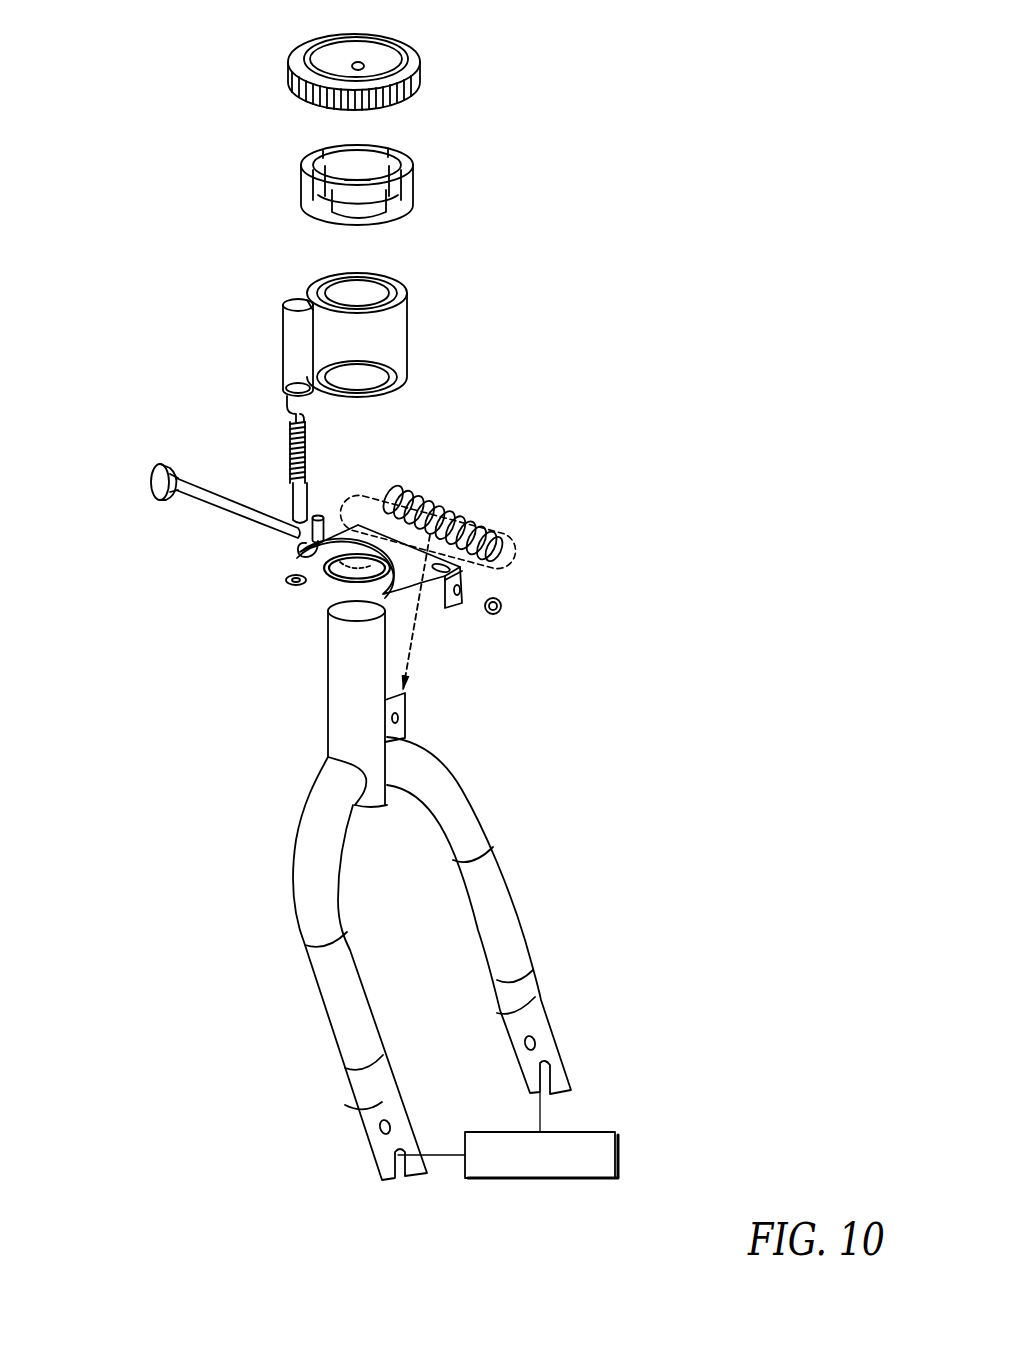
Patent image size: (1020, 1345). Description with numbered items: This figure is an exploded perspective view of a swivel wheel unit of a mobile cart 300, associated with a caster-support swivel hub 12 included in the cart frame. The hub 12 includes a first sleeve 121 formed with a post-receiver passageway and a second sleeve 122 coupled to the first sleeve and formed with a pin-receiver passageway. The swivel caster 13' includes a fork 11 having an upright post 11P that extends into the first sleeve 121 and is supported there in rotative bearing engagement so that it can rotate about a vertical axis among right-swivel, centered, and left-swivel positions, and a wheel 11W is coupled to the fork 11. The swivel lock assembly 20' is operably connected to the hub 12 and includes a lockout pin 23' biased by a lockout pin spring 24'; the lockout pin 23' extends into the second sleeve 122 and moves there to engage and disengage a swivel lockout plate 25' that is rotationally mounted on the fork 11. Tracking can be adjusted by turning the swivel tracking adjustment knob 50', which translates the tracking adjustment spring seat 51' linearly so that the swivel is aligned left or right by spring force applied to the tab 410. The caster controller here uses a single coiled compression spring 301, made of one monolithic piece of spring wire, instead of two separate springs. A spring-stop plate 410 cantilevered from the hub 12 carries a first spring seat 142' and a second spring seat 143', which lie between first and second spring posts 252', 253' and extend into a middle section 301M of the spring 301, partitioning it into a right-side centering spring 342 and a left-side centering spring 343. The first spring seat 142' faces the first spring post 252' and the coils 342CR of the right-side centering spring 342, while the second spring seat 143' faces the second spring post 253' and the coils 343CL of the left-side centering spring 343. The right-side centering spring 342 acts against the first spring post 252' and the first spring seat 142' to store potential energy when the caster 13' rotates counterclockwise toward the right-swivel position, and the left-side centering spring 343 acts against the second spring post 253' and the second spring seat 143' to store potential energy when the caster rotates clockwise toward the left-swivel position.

The mobile cart 300 is at (726, 172).
The swivel lock assembly 20' is at (286, 129).
The caster-support swivel hub 12 is at (361, 326).
The first sleeve 121 is at (407, 348).
The second sleeve 122 is at (282, 333).
The lockout pin spring 24' is at (237, 447).
The lockout pin 23' is at (253, 483).
The tracking adjustment spring seat 51' is at (334, 493).
The swivel tracking adjustment knob 50' is at (181, 511).
The swivel lockout plate 25' is at (340, 586).
The second spring post 253' is at (425, 611).
The first spring post 252' is at (533, 603).
The single coiled compression spring 301 is at (529, 515).
The left-side centering spring 343 is at (466, 480).
The coils 343CL is at (417, 488).
The right-side centering spring 342 is at (488, 522).
The coils 342CR is at (497, 533).
The middle section 301M is at (452, 506).
The fork 11 is at (422, 890).
The upright post 11P is at (331, 666).
The second spring seat 143' is at (316, 685).
The first spring seat 142' is at (476, 752).
The spring-stop plate 410 is at (420, 716).
The swivel caster 13' is at (505, 915).
The wheel 11W is at (620, 1153).